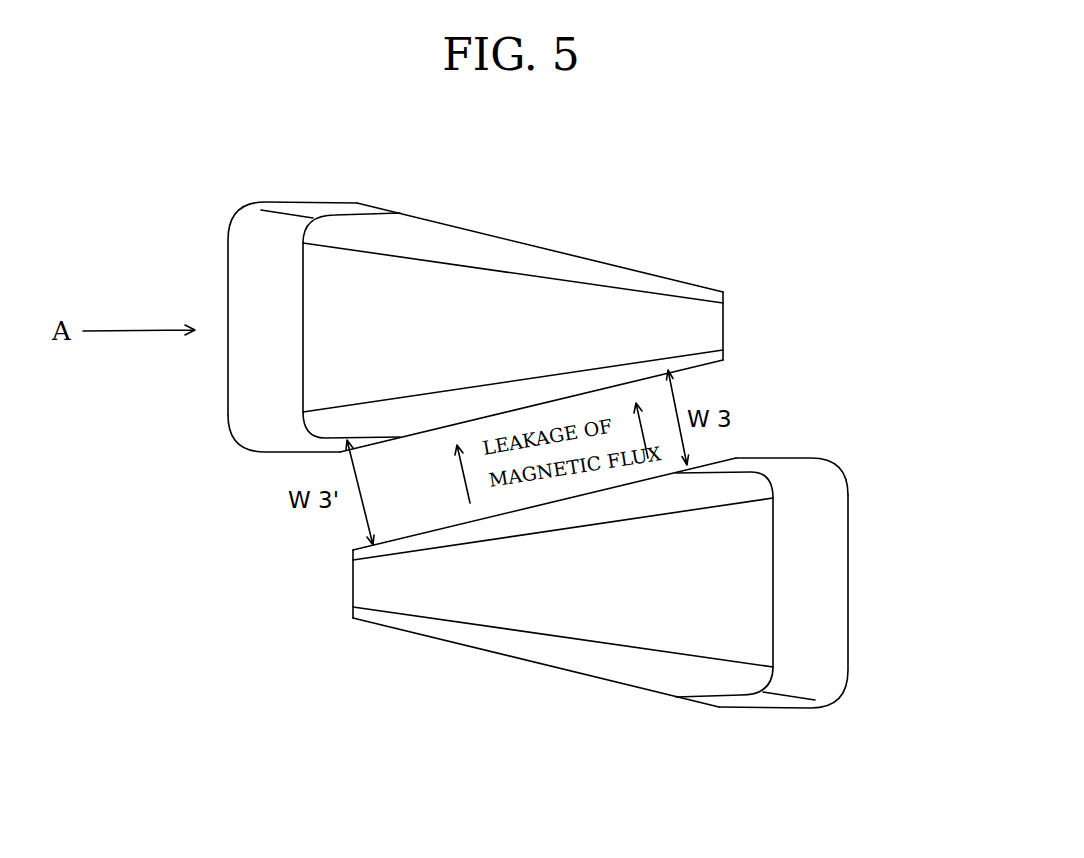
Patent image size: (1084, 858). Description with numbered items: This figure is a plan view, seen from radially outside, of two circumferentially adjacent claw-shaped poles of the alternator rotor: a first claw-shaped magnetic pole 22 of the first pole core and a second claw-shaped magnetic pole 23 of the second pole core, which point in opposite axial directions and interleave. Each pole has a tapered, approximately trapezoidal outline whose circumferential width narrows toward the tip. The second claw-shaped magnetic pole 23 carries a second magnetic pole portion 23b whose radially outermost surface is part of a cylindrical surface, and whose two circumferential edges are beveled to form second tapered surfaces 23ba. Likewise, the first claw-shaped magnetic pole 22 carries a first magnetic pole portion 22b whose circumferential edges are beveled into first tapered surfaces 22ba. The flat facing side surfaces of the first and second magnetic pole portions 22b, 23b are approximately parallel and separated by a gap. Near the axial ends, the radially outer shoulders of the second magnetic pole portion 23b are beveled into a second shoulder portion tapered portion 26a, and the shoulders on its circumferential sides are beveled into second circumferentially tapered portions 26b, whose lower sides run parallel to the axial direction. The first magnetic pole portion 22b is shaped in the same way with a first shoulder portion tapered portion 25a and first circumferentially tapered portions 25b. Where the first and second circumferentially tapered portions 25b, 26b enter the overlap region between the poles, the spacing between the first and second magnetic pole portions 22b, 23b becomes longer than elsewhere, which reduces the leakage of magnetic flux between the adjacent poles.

The first claw-shaped magnetic pole 22 is at (405, 634).
The first magnetic pole portion 22b is at (575, 620).
The first tapered surface 22ba is at (603, 663).
The second claw-shaped magnetic pole 23 is at (464, 223).
The second magnetic pole portion 23b is at (523, 288).
The second tapered surface 23ba is at (588, 272).
The first shoulder portion tapered portion 25a is at (832, 605).
The first circumferentially tapered portion 25b is at (757, 460).
The second shoulder portion tapered portion 26a is at (253, 257).
The second circumferentially tapered portion 26b is at (318, 210).